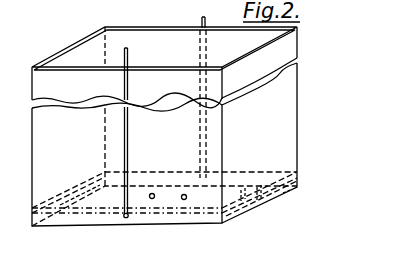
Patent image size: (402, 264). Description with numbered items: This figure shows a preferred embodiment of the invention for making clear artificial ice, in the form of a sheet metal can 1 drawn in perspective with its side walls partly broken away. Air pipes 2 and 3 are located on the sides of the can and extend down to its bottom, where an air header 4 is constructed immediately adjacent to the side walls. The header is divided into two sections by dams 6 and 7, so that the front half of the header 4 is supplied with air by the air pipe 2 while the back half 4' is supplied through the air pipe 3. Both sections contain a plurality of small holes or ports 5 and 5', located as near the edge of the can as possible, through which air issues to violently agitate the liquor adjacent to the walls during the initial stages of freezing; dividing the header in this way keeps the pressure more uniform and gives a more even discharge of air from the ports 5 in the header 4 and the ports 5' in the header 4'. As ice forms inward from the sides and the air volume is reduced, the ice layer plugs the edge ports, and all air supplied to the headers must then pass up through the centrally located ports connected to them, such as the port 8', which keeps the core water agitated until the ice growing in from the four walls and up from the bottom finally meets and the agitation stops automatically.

The sheet metal can 1 is at (297, 88).
The air pipe 2 is at (130, 56).
The air pipe 3 is at (201, 22).
The air header 4 is at (164, 210).
The back half of the header 4' is at (278, 175).
The holes or ports 5 is at (250, 221).
The ports 5' is at (309, 199).
The dam 6 is at (268, 204).
The dam 7 is at (80, 190).
The centrally located port 8' is at (185, 164).